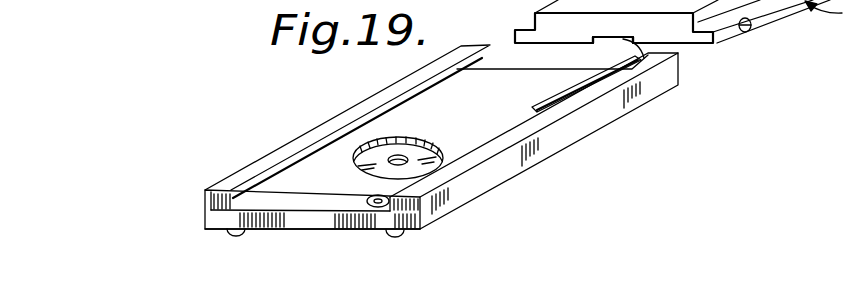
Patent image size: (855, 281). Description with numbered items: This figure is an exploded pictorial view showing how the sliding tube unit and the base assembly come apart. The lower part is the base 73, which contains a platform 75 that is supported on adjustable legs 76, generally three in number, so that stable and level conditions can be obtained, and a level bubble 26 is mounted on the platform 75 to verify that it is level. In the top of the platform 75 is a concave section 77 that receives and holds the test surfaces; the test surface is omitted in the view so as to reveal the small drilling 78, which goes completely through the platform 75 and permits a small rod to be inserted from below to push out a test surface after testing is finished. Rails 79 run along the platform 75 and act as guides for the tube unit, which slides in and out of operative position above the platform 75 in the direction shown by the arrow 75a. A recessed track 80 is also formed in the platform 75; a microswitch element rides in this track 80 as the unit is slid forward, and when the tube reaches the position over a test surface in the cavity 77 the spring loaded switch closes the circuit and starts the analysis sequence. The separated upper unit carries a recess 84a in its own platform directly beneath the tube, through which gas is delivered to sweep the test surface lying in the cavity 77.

The base 73 is at (494, 190).
The platform 75 is at (301, 198).
The arrow 75a is at (502, 67).
The adjustable legs 76 is at (242, 233).
The concave section 77 is at (417, 157).
The small drilling 78 is at (399, 155).
The rails 79 is at (257, 170).
The recessed track 80 is at (589, 82).
The recess 84a is at (645, 43).
The level bubble 26 is at (373, 207).